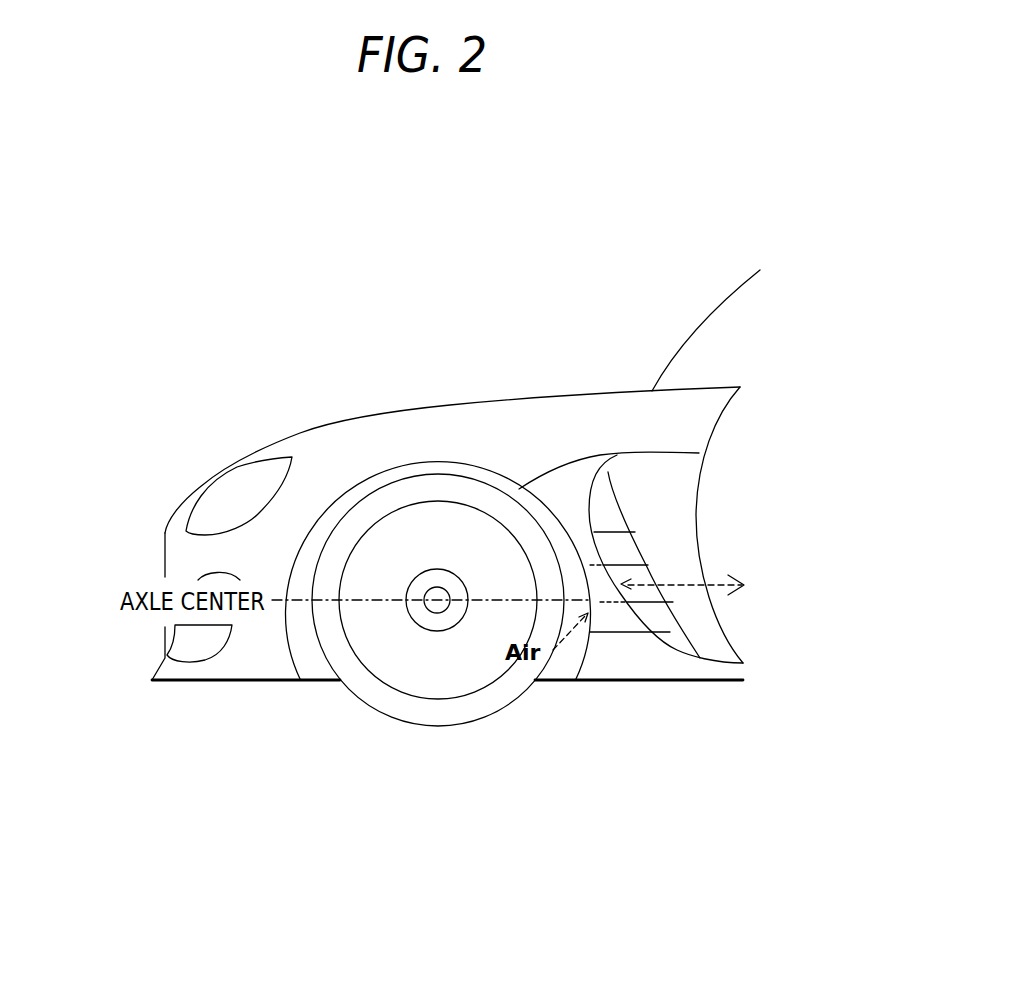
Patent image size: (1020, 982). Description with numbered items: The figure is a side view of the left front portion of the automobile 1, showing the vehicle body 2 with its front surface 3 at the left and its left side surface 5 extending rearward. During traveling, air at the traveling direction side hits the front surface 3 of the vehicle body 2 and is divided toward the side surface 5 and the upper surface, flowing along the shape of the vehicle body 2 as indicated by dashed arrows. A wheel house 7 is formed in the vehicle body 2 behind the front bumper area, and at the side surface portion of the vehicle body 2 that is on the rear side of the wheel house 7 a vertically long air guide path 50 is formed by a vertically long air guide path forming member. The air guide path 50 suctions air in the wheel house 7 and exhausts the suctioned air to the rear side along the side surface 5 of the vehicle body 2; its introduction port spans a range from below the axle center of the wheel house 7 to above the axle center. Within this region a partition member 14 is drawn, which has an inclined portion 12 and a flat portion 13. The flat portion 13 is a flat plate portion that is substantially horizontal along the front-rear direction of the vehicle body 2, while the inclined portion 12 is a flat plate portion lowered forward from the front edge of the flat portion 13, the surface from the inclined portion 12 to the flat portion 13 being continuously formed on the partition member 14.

The automobile 1 is at (547, 352).
The vehicle body 2 is at (407, 413).
The front surface 3 is at (163, 552).
The side surface 5 is at (567, 427).
The wheel house 7 is at (312, 663).
The inclined portion 12 is at (603, 605).
The flat portion 13 is at (660, 595).
The partition member 14 is at (599, 587).
The vertically long air guide path 50 is at (624, 583).